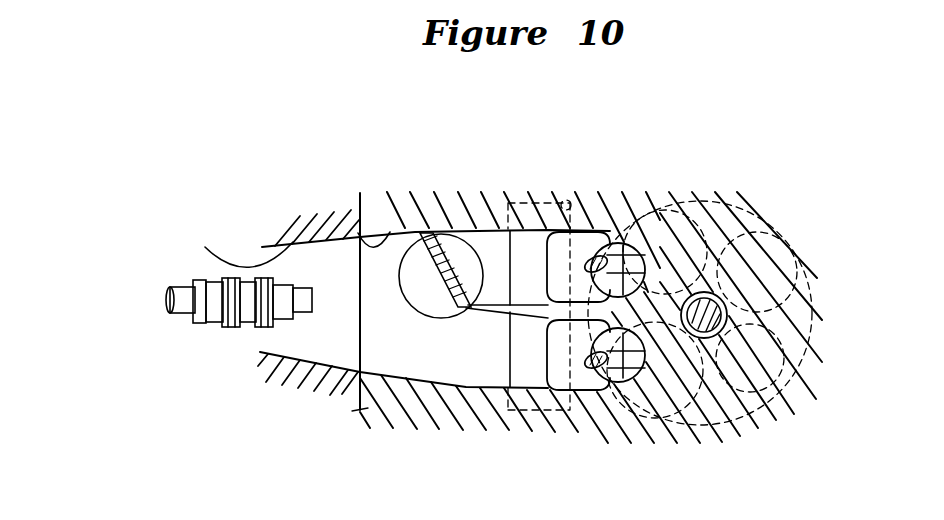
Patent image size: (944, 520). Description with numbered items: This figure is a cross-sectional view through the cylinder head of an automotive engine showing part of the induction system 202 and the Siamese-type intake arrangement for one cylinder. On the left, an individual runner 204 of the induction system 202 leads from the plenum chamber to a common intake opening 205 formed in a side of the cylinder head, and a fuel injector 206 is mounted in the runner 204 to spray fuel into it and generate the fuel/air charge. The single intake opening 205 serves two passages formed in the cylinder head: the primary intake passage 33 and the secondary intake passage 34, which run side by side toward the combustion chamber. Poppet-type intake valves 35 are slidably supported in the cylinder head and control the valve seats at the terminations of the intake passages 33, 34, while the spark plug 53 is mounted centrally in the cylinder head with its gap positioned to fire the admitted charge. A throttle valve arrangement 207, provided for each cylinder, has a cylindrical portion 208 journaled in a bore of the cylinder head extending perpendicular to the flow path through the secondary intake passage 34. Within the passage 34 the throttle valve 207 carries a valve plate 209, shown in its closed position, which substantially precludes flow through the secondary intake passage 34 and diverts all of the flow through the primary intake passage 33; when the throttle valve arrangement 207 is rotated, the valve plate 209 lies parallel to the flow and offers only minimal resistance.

The induction system 202 is at (250, 178).
The runner 204 is at (267, 302).
The intake opening 205 is at (391, 232).
The fuel injector 206 is at (186, 315).
The throttle valve arrangement 207 is at (437, 326).
The cylindrical portion 208 is at (413, 302).
The valve plate 209 is at (482, 232).
The primary intake passage 33 is at (492, 356).
The secondary intake passage 34 is at (535, 281).
The intake valve 35 is at (590, 257).
The spark plug 53 is at (706, 292).